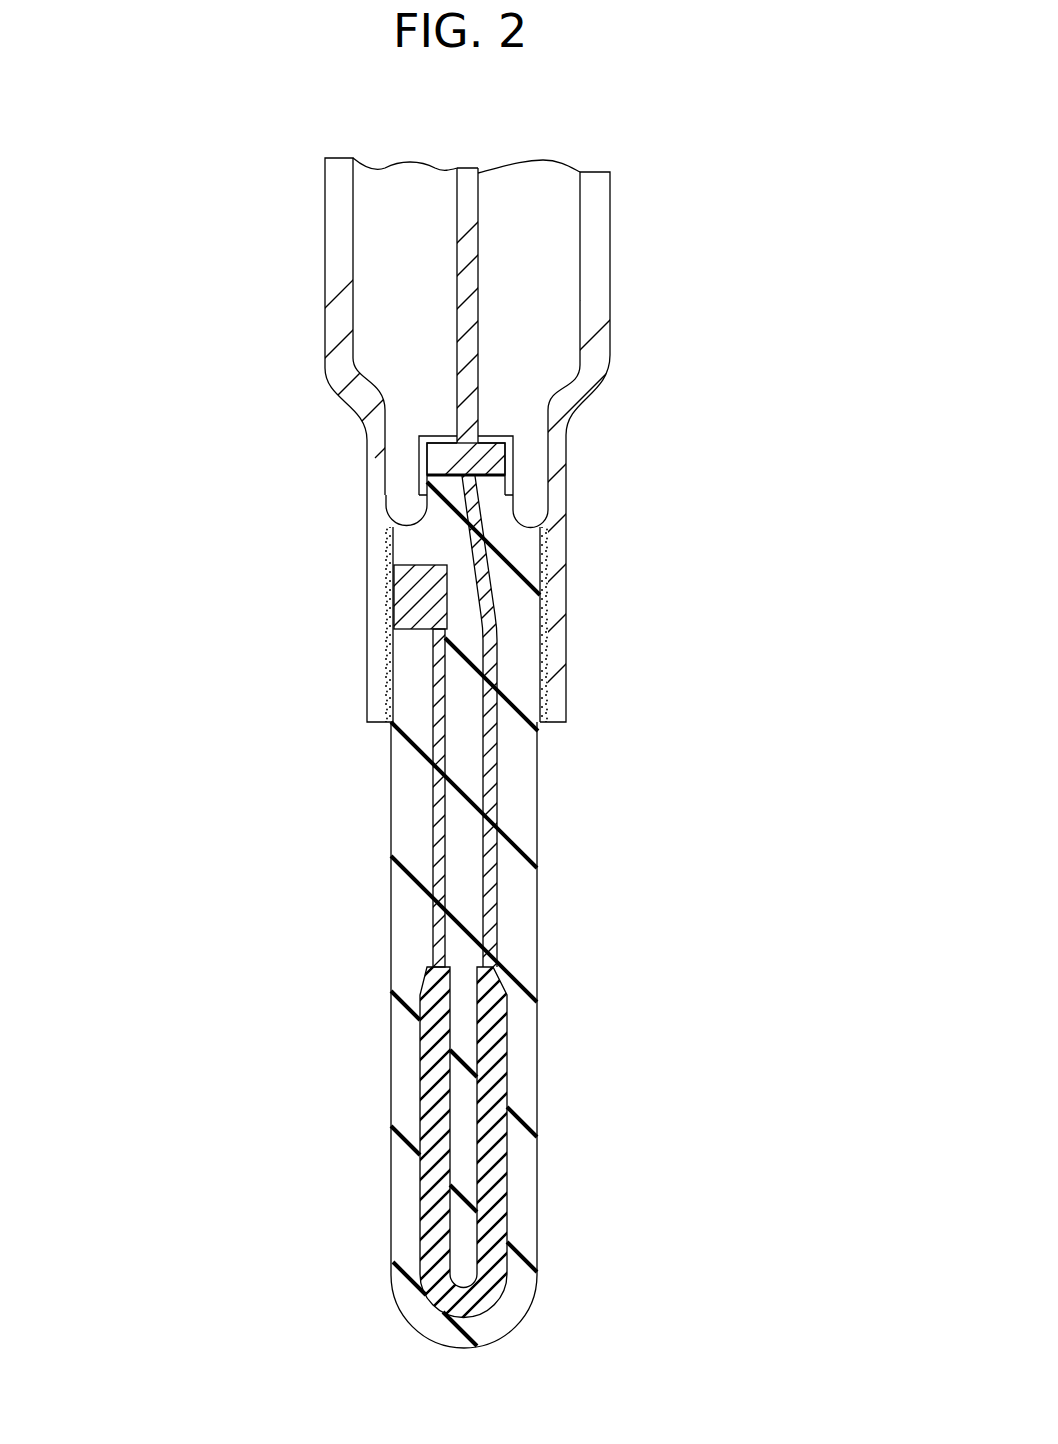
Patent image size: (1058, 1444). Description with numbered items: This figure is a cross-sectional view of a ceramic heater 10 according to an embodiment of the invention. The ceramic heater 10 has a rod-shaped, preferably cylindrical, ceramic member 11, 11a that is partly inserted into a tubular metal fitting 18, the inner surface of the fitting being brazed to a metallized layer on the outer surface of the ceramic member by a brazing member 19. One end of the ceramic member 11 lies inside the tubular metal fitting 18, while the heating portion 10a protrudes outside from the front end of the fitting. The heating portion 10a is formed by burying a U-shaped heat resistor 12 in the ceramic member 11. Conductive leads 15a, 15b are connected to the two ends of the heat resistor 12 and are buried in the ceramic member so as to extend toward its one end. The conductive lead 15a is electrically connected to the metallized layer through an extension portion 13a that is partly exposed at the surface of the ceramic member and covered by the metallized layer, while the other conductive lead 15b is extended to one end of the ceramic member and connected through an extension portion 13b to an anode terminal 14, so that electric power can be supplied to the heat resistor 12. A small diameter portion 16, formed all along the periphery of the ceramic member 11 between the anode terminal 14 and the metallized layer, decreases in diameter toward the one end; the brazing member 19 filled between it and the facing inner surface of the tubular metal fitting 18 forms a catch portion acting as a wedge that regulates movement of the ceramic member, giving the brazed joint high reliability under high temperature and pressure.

The ceramic heater 10 is at (616, 744).
The heating portion 10a is at (476, 1150).
The ceramic member 11 is at (559, 915).
The tube wall 11a is at (523, 1060).
The heat resistor 12 is at (503, 982).
The extension portion 13a is at (417, 588).
The extension portion 13b is at (487, 458).
The anode terminal 14 is at (490, 432).
The conductive lead 15a is at (440, 890).
The conductive lead 15b is at (497, 775).
The small diameter portion 16 is at (432, 527).
The tubular metal fitting 18 is at (338, 257).
The brazing member 19 is at (387, 655).